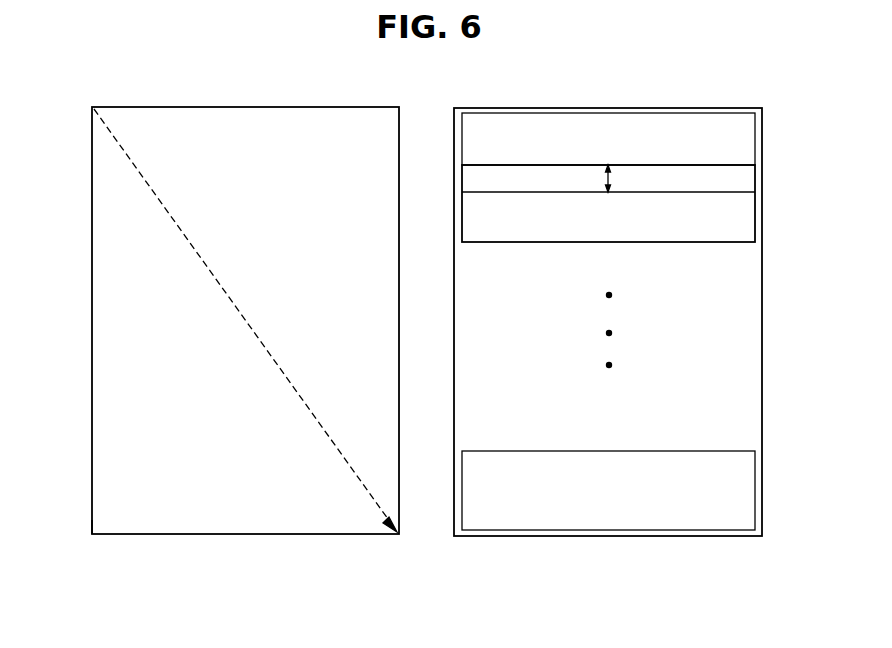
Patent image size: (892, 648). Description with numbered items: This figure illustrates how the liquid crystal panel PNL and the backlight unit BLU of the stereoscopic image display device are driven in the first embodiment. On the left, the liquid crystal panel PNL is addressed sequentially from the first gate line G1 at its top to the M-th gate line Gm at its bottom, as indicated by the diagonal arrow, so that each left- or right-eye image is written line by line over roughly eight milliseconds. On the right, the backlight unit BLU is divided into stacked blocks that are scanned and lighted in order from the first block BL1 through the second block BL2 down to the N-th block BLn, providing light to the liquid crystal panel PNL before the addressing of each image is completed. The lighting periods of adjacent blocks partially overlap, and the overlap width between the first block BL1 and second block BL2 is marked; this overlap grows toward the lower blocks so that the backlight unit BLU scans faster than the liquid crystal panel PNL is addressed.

The liquid crystal panel PNL is at (240, 534).
The backlight unit BLU is at (610, 536).
The first block BL1 is at (628, 139).
The second block BL2 is at (628, 203).
The N-th block BLn is at (628, 490).
The first gate line G1 is at (230, 320).
The M-th gate line Gm is at (78, 524).